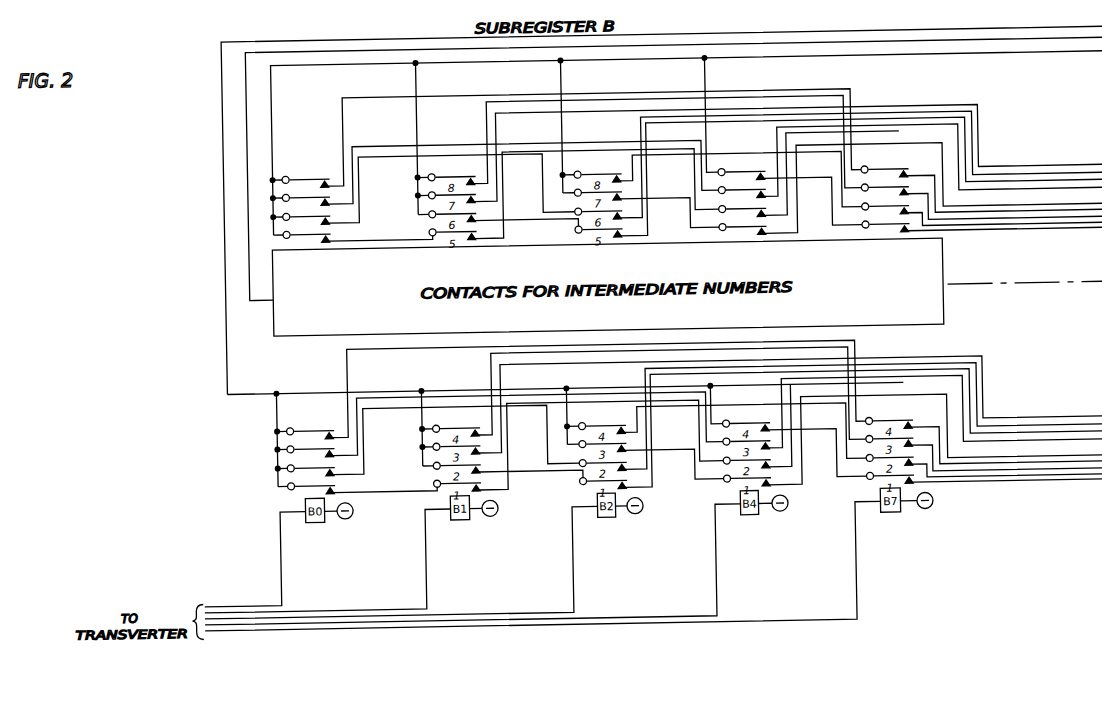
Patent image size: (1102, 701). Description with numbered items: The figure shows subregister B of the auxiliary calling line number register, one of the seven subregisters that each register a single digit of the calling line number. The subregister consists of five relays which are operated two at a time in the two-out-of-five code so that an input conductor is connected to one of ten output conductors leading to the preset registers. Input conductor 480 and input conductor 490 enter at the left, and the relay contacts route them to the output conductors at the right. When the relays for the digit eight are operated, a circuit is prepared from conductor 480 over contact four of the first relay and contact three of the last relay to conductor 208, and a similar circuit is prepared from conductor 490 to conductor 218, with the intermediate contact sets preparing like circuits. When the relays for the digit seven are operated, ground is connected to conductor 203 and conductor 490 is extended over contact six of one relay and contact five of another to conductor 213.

The conductor 480 is at (224, 262).
The conductor 490 is at (978, 61).
The conductor 213 is at (1012, 189).
The conductor 218 is at (1012, 226).
The conductor 203 is at (789, 422).
The conductor 208 is at (935, 455).